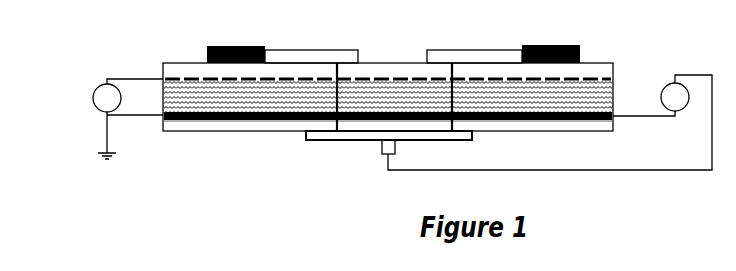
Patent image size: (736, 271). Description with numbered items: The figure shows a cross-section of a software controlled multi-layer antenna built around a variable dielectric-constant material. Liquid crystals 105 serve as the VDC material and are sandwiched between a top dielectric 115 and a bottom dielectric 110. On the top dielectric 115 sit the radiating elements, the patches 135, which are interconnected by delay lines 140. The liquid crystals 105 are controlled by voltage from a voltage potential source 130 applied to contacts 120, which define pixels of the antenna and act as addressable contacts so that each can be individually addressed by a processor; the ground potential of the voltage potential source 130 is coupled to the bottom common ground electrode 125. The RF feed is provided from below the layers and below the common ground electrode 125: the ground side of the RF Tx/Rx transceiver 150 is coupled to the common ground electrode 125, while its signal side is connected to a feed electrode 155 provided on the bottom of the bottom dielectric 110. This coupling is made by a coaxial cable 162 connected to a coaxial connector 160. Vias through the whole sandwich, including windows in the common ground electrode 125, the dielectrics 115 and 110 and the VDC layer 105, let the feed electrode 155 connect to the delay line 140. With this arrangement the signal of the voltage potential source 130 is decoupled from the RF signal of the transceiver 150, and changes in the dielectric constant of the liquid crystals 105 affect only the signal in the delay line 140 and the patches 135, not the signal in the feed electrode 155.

The liquid crystals 105 is at (288, 98).
The bottom dielectric 110 is at (187, 125).
The top dielectric 115 is at (420, 62).
The contacts 120 is at (595, 75).
The bottom common ground electrode 125 is at (262, 122).
The voltage potential source 130 is at (107, 80).
The patches 135 is at (208, 47).
The delay lines 140 is at (343, 51).
The RF Tx/Rx (transceiver) 150 is at (668, 78).
The feed electrode 155 is at (372, 141).
The coaxial connector 160 is at (387, 156).
The coaxial cable 162 is at (615, 171).